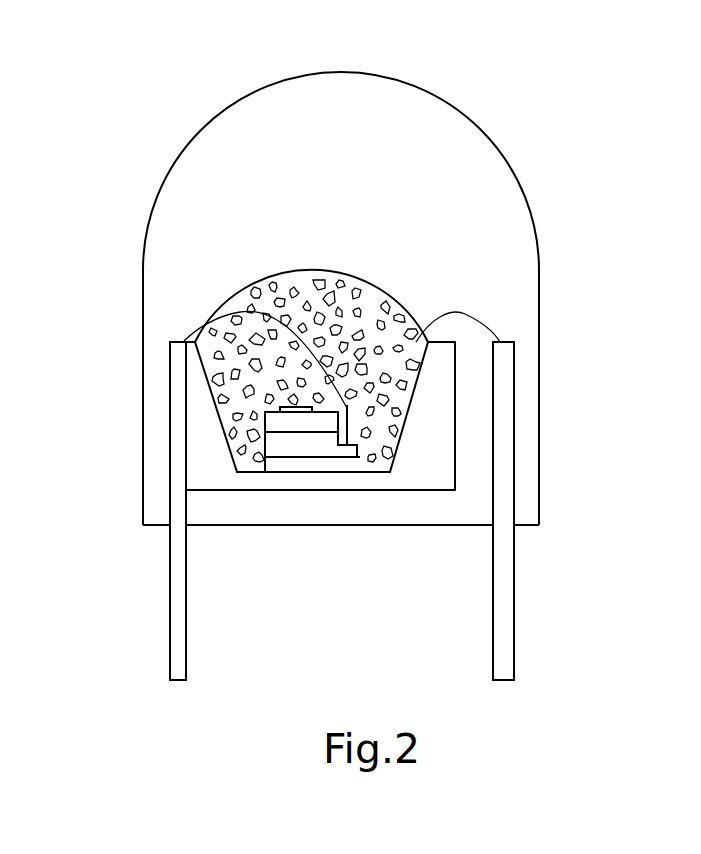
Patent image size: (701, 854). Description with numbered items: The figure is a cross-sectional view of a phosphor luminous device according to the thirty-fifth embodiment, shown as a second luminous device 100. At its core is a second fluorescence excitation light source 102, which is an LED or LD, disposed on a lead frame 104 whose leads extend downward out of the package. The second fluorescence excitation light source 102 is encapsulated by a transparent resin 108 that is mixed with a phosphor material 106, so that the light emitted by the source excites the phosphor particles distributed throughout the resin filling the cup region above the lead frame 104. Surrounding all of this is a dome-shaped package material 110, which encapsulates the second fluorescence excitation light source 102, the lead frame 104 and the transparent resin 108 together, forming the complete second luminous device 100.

The second luminous device 100 is at (350, 358).
The second fluorescence excitation light source 102 is at (305, 443).
The lead frame 104 is at (170, 602).
The phosphor material 106 is at (238, 302).
The transparent resin 108 is at (372, 290).
The package material 110 is at (492, 147).